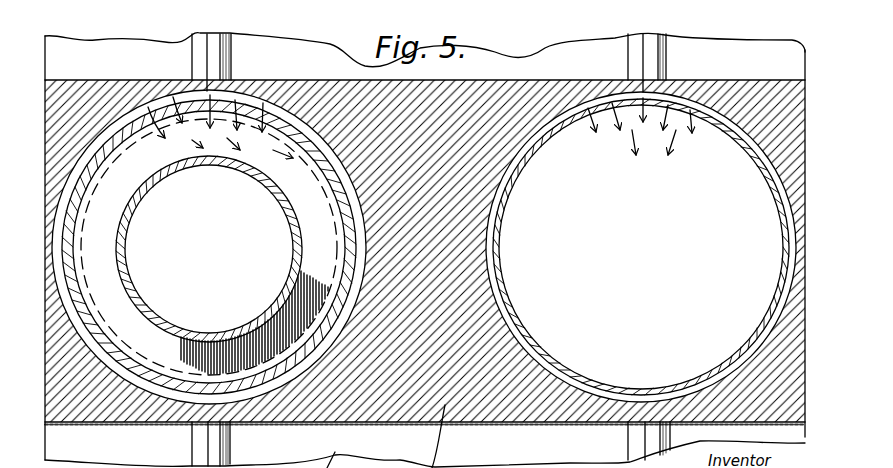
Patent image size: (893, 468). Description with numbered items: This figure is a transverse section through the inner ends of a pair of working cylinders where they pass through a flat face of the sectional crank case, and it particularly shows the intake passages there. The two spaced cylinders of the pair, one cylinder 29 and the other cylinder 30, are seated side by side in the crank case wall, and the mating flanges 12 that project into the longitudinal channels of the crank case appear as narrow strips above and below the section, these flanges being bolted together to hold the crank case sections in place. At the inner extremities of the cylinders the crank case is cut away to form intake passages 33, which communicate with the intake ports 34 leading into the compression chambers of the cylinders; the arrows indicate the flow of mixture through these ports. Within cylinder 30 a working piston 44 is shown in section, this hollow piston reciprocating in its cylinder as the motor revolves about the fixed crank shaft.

The mating flanges 12 is at (650, 45).
The working cylinder 29 is at (338, 150).
The working cylinder 30 is at (346, 190).
The intake passages 33 is at (747, 141).
The intake ports 34 is at (263, 110).
The working piston 44 is at (298, 252).